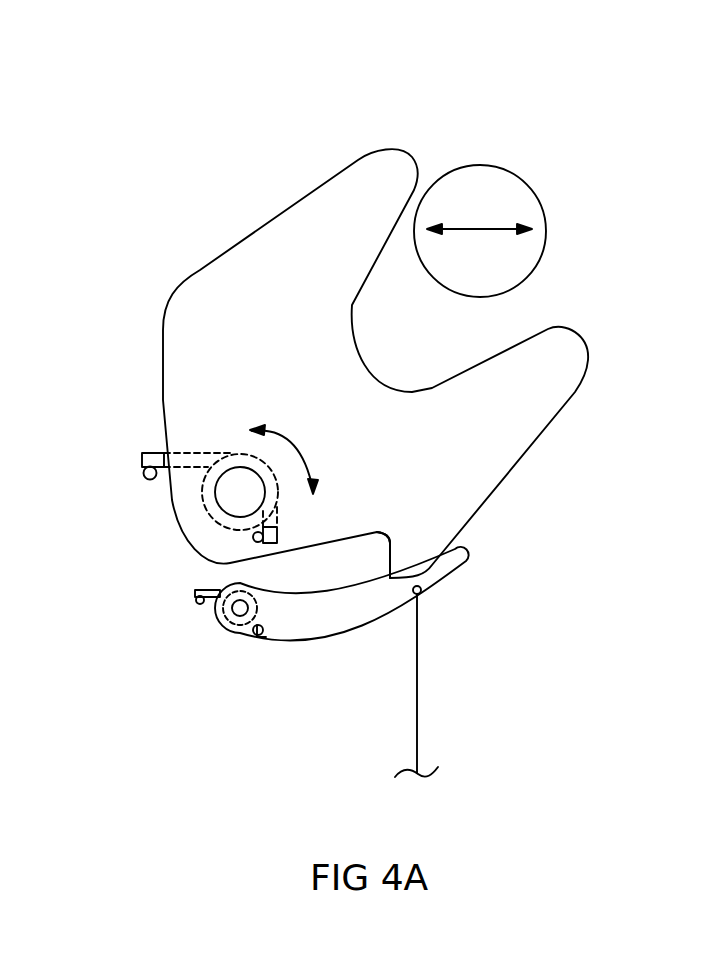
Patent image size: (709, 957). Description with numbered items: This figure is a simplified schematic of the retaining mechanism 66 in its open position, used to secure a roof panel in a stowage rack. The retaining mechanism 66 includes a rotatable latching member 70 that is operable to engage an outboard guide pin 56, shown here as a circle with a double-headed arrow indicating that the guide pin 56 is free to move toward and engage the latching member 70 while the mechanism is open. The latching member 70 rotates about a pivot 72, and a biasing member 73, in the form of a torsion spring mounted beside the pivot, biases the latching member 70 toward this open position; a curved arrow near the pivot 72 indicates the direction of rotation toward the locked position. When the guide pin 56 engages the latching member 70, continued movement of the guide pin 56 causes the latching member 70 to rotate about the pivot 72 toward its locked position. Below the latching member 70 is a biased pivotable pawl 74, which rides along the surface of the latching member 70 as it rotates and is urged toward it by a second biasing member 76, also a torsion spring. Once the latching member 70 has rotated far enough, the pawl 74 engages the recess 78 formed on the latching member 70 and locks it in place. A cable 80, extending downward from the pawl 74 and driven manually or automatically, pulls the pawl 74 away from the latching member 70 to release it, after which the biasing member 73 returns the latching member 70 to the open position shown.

The guide pin 56 is at (483, 173).
The retaining mechanism 66 is at (425, 312).
The latching member 70 is at (355, 188).
The pivot 72 is at (240, 487).
The biasing member 73 is at (150, 456).
The pawl 74 is at (332, 632).
The biasing member 76 is at (198, 592).
The recess 78 is at (377, 530).
The cable 80 is at (417, 705).